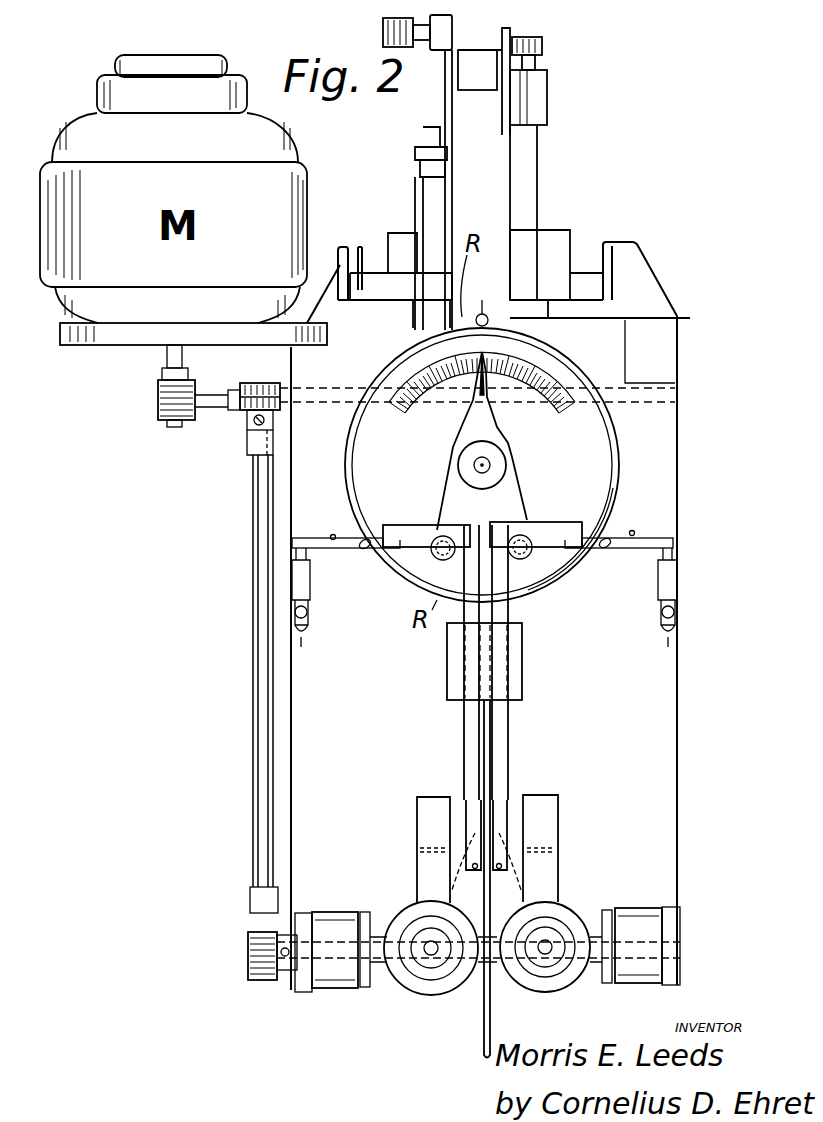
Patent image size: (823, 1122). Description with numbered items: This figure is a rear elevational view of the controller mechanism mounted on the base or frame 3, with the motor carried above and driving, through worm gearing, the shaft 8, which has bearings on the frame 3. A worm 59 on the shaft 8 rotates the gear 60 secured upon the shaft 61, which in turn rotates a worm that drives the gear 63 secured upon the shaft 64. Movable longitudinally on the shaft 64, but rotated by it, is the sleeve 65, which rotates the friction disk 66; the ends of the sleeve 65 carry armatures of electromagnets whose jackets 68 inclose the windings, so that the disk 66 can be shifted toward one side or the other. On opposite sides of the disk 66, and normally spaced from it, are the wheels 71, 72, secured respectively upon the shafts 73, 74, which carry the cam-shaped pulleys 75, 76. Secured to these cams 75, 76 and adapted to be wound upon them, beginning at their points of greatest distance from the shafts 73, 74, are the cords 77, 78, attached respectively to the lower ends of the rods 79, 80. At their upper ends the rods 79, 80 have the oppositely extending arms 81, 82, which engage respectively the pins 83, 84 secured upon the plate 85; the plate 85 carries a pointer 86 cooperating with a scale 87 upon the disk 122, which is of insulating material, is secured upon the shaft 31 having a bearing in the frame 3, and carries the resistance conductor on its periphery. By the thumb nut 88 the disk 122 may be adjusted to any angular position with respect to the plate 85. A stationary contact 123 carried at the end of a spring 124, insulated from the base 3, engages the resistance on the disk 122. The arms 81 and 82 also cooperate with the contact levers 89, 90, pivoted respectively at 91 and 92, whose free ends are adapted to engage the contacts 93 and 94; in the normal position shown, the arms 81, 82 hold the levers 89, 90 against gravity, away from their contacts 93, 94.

The frame 3 is at (291, 712).
The shaft 8 is at (210, 393).
The shaft 31 is at (492, 464).
The worm 59 is at (249, 383).
The gear 60 is at (245, 415).
The shaft 61 is at (252, 812).
The gear 63 is at (268, 982).
The shaft 64 is at (378, 933).
The sleeve 65 is at (389, 988).
The friction disk 66 is at (491, 1015).
The jackets 68 is at (325, 912).
The wheel 71 is at (580, 982).
The wheel 72 is at (428, 996).
The shaft 73 is at (548, 956).
The shaft 74 is at (440, 960).
The cam-shaped pulley 75 is at (552, 924).
The cam-shaped pulley 76 is at (437, 924).
The cord 77 is at (501, 877).
The cord 78 is at (475, 873).
The rod 79 is at (508, 728).
The rod 80 is at (464, 728).
The arm 81 is at (563, 522).
The arm 82 is at (397, 525).
The pin 83 is at (527, 558).
The pin 84 is at (437, 557).
The plate 85 is at (527, 497).
The pointer 86 is at (563, 350).
The scale 87 is at (500, 362).
The thumb nut 88 is at (460, 467).
The contact lever 89 is at (585, 558).
The contact lever 90 is at (390, 550).
The pivot 91 is at (608, 538).
The pivot 92 is at (360, 540).
The contact 93 is at (683, 552).
The contact 94 is at (310, 568).
The disk 122 is at (552, 568).
The stationary contact 123 is at (477, 315).
The spring 124 is at (600, 320).